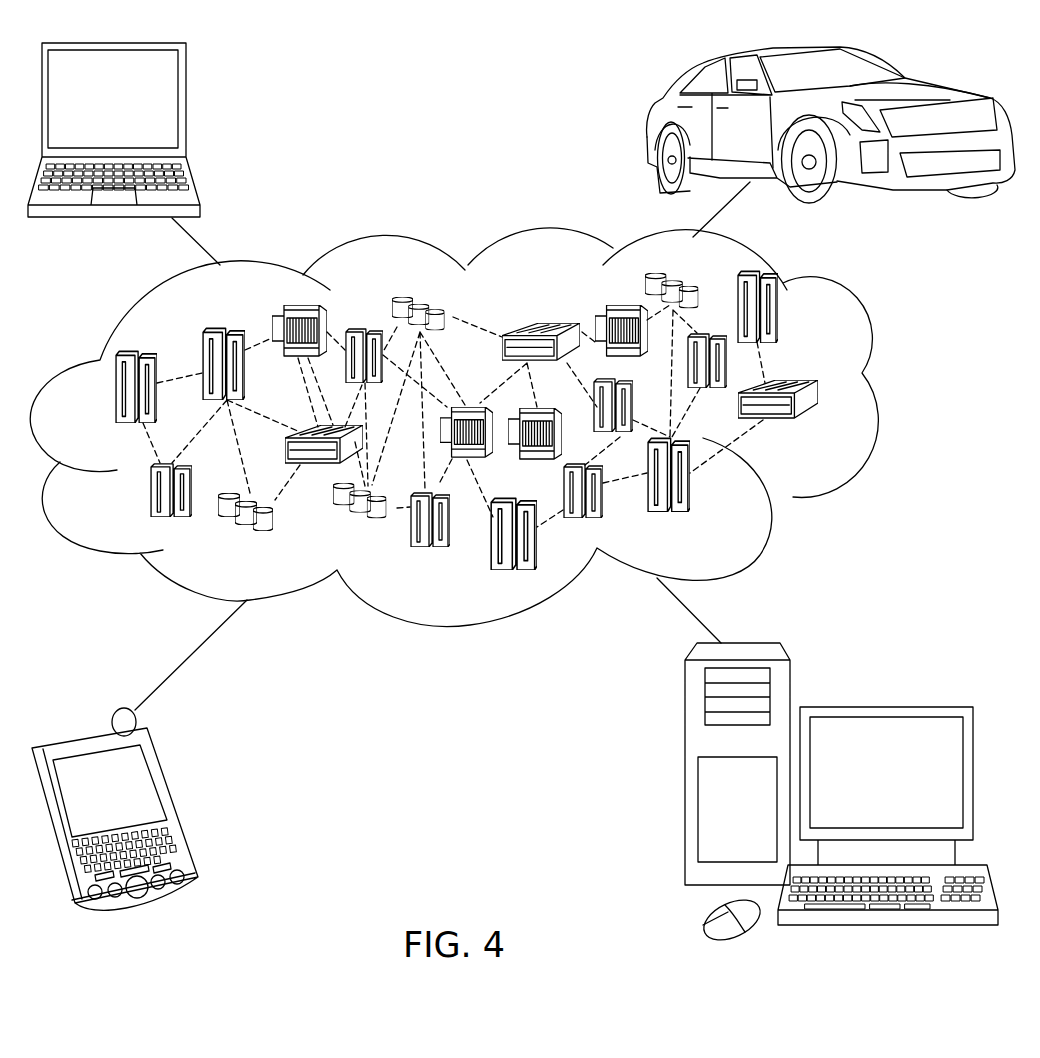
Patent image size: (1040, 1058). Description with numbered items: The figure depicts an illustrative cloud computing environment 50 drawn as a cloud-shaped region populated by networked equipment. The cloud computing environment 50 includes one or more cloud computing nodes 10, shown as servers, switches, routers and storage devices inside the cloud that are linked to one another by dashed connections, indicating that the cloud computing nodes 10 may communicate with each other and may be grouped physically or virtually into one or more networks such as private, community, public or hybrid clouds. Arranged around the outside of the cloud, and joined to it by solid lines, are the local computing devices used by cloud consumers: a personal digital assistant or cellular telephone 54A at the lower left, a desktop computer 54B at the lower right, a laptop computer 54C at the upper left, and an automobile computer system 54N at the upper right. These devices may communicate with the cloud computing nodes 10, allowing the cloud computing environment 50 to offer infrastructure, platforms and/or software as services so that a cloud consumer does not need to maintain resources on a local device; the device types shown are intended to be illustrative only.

The cloud computing environment 50 is at (885, 398).
The cloud computing node 10 is at (821, 430).
The personal digital assistant or cellular telephone 54A is at (175, 803).
The desktop computer 54B is at (882, 707).
The laptop computer 54C is at (187, 109).
The automobile computer system 54N is at (650, 126).